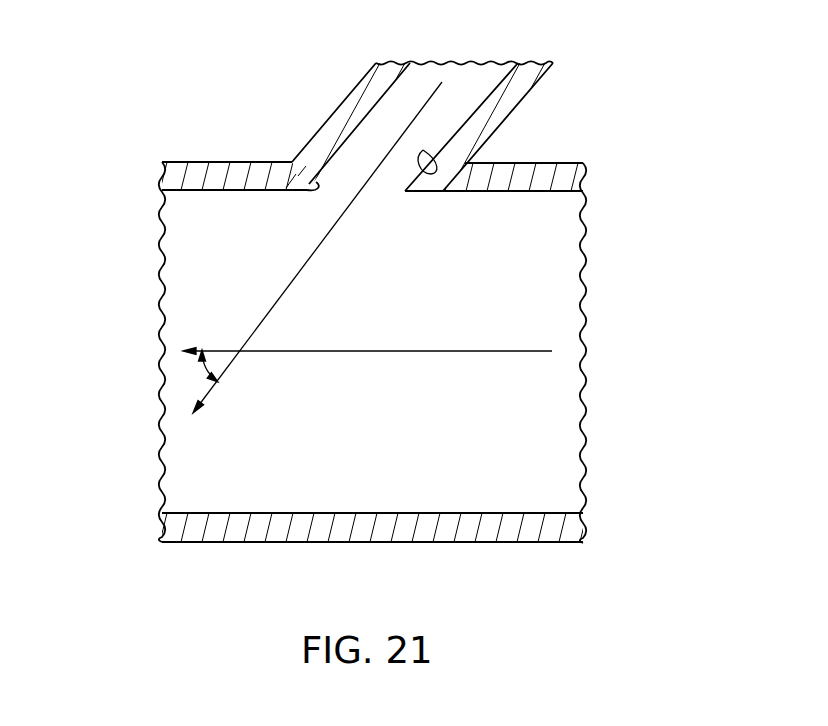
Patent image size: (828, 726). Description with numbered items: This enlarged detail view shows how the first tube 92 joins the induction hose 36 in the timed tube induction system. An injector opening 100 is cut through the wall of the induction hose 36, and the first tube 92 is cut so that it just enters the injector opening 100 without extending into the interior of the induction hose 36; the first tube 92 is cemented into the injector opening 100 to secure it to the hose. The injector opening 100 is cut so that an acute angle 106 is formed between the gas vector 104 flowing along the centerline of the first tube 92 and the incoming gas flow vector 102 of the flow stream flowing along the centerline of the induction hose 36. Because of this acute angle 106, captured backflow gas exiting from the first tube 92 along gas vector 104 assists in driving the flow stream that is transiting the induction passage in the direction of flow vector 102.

The induction hose 36 is at (182, 167).
The first tube 92 is at (508, 102).
The injector opening 100 is at (292, 163).
The incoming gas flow vector 102 is at (417, 352).
The gas vector 104 is at (463, 110).
The acute angle 106 is at (218, 379).